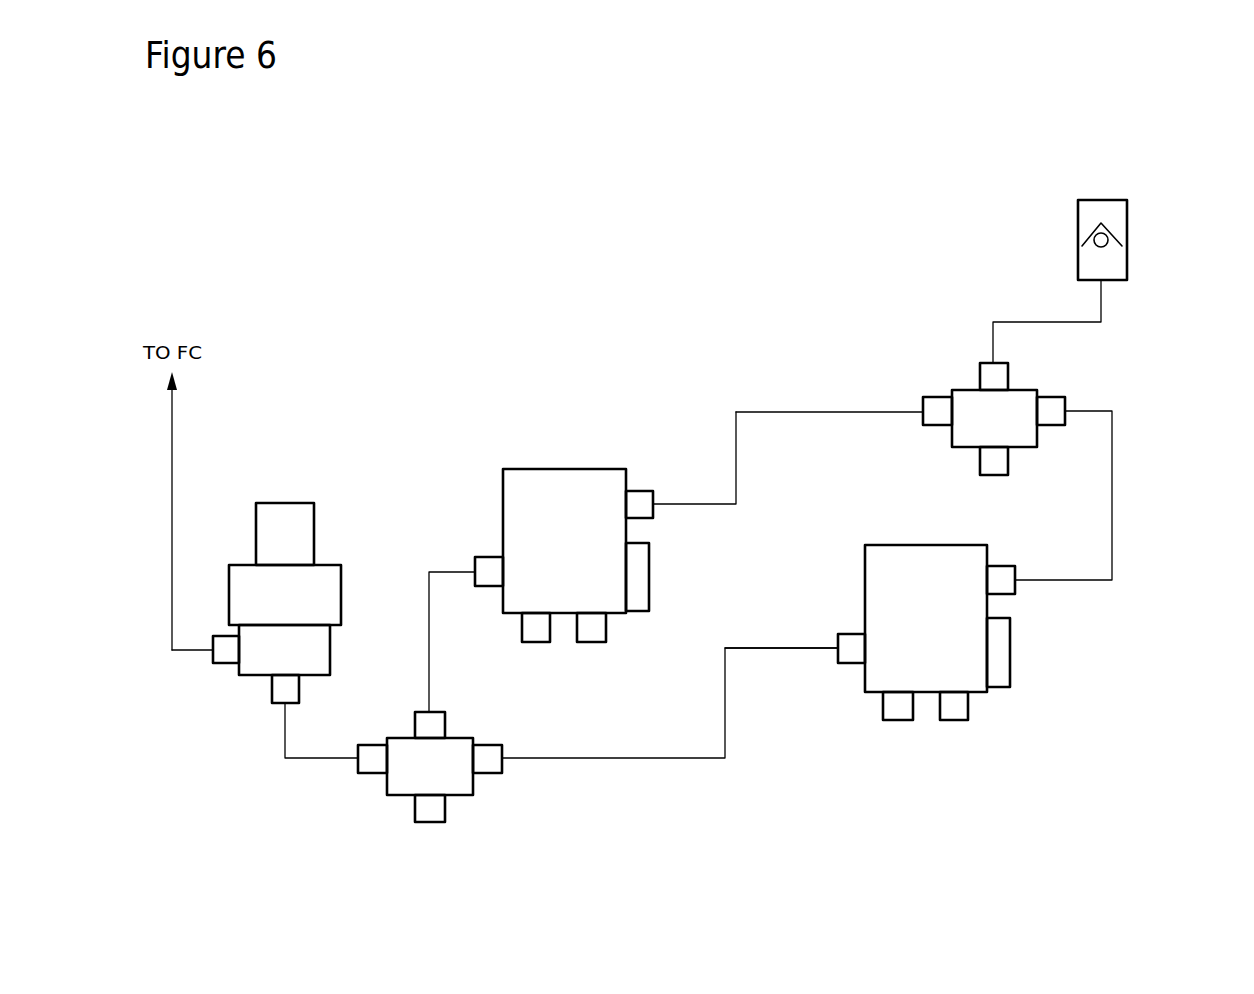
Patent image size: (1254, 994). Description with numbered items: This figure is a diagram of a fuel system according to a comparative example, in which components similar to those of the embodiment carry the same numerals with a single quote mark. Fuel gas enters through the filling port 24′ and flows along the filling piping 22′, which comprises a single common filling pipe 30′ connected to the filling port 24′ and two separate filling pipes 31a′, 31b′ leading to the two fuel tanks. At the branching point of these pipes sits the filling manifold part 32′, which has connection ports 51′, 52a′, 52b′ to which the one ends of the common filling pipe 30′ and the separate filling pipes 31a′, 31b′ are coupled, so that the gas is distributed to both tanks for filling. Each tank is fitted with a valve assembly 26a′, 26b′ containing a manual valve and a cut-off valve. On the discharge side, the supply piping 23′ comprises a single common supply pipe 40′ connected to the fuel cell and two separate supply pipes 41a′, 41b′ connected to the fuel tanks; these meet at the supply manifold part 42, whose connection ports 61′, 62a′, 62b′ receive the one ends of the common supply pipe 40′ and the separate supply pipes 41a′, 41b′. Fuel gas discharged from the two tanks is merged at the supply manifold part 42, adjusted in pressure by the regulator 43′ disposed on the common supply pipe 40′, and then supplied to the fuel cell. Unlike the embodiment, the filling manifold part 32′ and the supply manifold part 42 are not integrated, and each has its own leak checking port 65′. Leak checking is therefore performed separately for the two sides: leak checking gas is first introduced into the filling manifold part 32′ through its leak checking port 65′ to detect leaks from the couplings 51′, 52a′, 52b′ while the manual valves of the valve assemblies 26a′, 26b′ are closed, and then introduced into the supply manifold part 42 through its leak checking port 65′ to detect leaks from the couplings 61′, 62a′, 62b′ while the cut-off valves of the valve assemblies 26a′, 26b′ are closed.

The regulator 43′ is at (288, 520).
The common supply pipe 40′ is at (315, 762).
The supply manifold part 42 is at (440, 777).
The connection port 61′ is at (373, 757).
The connection port 62a′ is at (433, 720).
The connection port 62b′ is at (487, 752).
The leak checking port 65′ is at (417, 825).
The separate supply pipe 41a′ is at (450, 571).
The separate supply pipe 41b′ is at (698, 762).
The supply piping 23′ is at (788, 652).
The valve assembly 26a′ is at (557, 504).
The valve assembly 26b′ is at (957, 643).
The filling piping 22′ is at (729, 429).
The separate filling pipe 31a′ is at (788, 410).
The separate filling pipe 31b′ is at (1125, 495).
The filling manifold part 32′ is at (973, 412).
The connection port 51′ is at (980, 372).
The connection port 52a′ is at (935, 415).
The connection port 52b′ is at (1050, 407).
The common filling pipe 30′ is at (1050, 321).
The filling port 24′ is at (1130, 247).